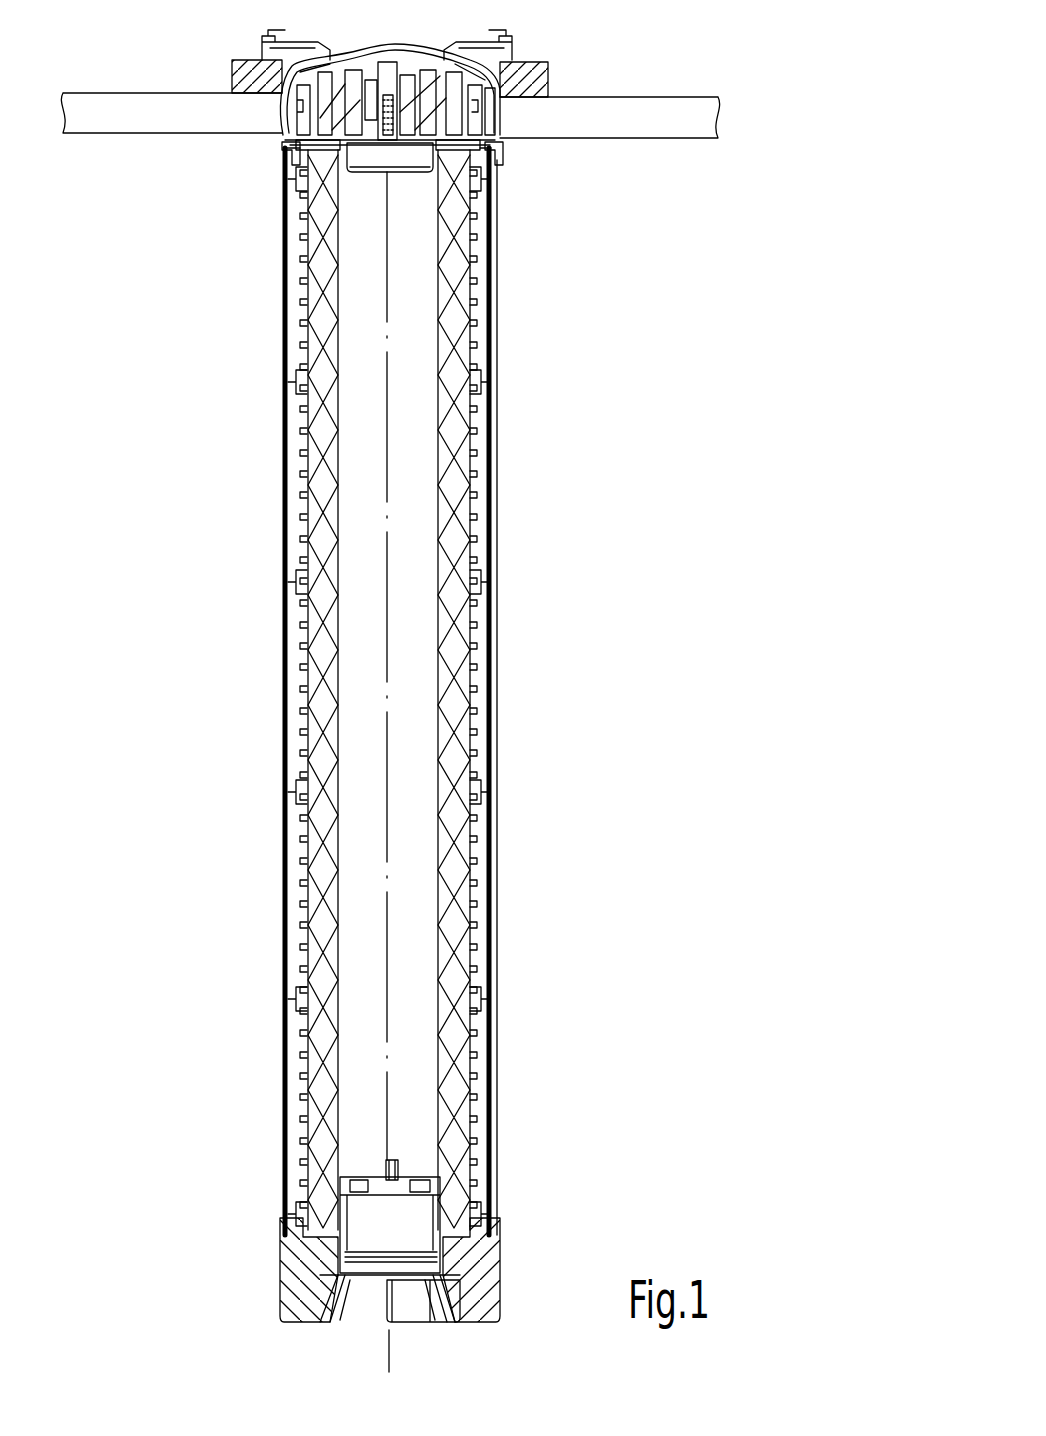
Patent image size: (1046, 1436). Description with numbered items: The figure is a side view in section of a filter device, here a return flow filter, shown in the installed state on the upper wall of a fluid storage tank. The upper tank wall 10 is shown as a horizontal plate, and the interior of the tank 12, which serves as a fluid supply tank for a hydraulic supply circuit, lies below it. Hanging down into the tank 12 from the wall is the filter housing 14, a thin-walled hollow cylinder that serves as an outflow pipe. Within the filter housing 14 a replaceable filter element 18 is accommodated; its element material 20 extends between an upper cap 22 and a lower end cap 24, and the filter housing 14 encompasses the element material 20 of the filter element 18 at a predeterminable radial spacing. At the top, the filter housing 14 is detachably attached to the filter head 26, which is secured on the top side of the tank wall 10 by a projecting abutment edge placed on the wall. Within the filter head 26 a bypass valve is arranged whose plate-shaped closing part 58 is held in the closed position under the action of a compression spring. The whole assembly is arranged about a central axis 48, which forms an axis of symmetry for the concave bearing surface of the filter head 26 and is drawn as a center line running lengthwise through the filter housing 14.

The tank wall 10 is at (688, 118).
The tank 12 is at (698, 948).
The filter housing 14 is at (495, 578).
The filter element 18 is at (476, 482).
The element material 20 is at (476, 482).
The upper cap 22 is at (502, 152).
The lower end cap 24 is at (470, 1270).
The filter head 26 is at (537, 80).
The axis 48 is at (387, 817).
The closing part 58 is at (403, 153).